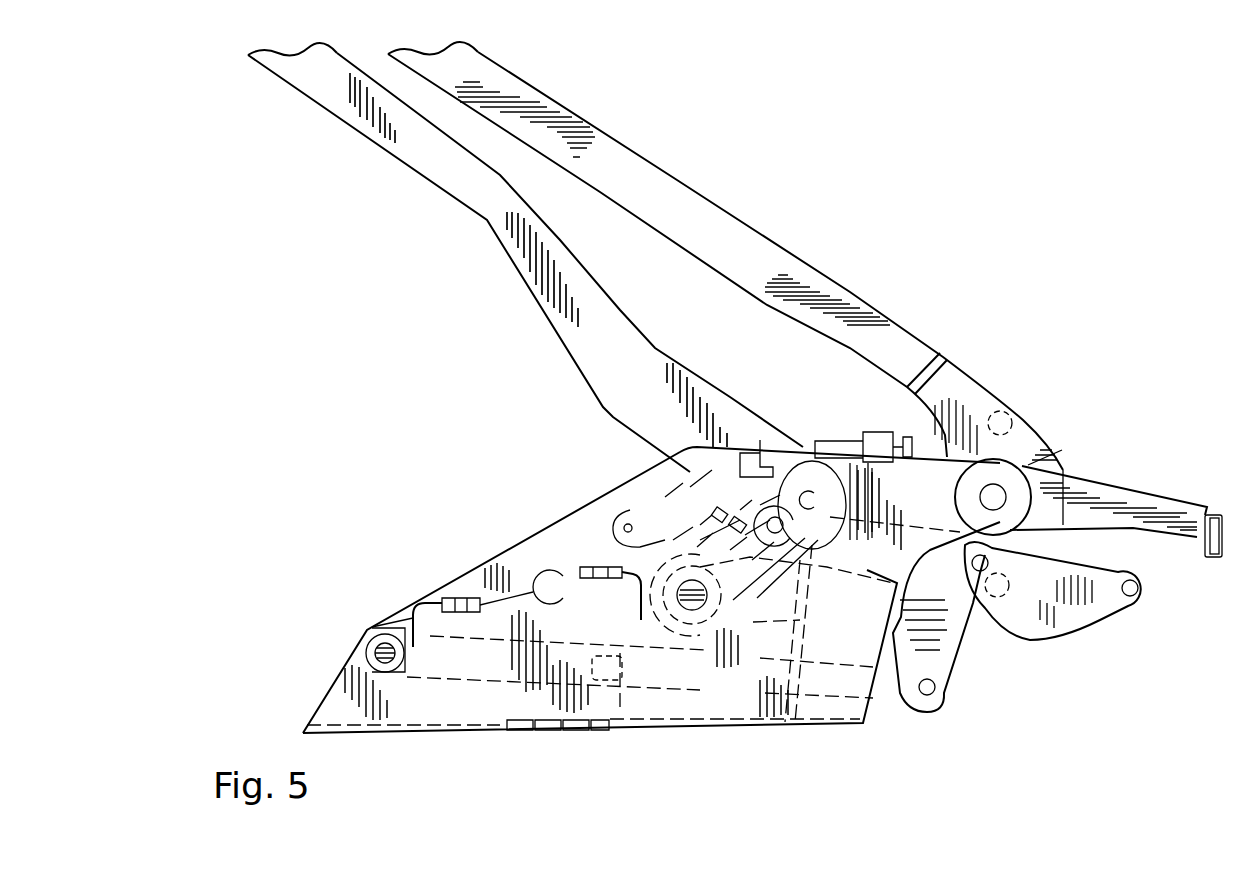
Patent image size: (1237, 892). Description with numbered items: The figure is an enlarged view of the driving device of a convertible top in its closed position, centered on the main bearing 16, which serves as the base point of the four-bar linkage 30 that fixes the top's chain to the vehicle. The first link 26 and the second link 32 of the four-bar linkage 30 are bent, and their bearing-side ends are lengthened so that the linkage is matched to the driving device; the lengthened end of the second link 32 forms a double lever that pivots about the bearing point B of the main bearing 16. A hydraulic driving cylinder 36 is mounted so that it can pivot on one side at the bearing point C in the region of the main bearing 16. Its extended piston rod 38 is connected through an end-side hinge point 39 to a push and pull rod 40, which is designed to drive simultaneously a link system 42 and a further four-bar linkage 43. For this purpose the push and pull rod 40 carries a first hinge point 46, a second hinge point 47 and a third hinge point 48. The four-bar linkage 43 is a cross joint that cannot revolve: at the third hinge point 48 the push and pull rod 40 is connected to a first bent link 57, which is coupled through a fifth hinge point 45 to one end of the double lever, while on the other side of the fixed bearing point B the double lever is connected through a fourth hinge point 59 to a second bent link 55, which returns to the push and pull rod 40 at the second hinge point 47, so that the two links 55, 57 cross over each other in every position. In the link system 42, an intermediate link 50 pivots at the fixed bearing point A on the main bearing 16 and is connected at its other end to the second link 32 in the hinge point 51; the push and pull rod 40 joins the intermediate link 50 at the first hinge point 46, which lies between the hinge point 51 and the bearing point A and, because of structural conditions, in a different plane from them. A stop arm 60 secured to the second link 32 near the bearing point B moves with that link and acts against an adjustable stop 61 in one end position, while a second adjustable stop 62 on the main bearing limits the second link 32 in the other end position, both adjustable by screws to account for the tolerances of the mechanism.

The main bearing 16 is at (290, 667).
The first link 26 is at (748, 255).
The four-bar linkage 30 is at (634, 260).
The second link 32 is at (417, 150).
The hydraulic driving cylinder 36 is at (447, 658).
The piston rod 38 is at (728, 657).
The hinge point 39 is at (917, 703).
The push and pull rod 40 is at (622, 512).
The link system 42 is at (690, 512).
The four-bar linkage 43 is at (1083, 462).
The fifth hinge point 45 is at (977, 595).
The first hinge point 46 is at (768, 503).
The second hinge point 47 is at (990, 613).
The third hinge point 48 is at (1110, 650).
The intermediate link 50 is at (715, 557).
The hinge point 51 is at (808, 463).
The second bent link 55 is at (1030, 464).
The first bent link 57 is at (1053, 636).
The fourth hinge point 59 is at (1013, 423).
The stop arm 60 is at (1167, 515).
The stop 61 is at (747, 457).
The second adjustable stop 62 is at (867, 433).
The bearing point A is at (680, 590).
The bearing point B is at (987, 473).
The bearing point C is at (372, 628).